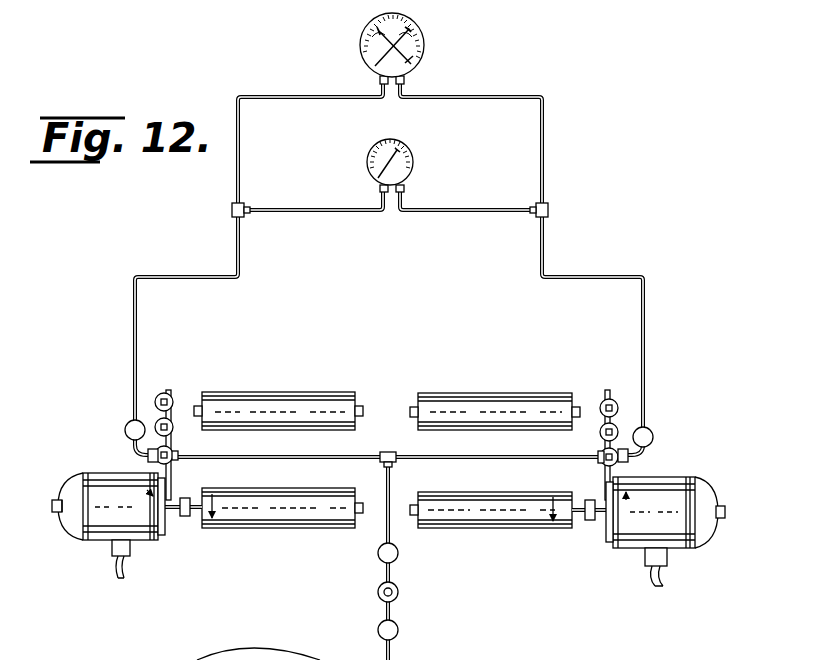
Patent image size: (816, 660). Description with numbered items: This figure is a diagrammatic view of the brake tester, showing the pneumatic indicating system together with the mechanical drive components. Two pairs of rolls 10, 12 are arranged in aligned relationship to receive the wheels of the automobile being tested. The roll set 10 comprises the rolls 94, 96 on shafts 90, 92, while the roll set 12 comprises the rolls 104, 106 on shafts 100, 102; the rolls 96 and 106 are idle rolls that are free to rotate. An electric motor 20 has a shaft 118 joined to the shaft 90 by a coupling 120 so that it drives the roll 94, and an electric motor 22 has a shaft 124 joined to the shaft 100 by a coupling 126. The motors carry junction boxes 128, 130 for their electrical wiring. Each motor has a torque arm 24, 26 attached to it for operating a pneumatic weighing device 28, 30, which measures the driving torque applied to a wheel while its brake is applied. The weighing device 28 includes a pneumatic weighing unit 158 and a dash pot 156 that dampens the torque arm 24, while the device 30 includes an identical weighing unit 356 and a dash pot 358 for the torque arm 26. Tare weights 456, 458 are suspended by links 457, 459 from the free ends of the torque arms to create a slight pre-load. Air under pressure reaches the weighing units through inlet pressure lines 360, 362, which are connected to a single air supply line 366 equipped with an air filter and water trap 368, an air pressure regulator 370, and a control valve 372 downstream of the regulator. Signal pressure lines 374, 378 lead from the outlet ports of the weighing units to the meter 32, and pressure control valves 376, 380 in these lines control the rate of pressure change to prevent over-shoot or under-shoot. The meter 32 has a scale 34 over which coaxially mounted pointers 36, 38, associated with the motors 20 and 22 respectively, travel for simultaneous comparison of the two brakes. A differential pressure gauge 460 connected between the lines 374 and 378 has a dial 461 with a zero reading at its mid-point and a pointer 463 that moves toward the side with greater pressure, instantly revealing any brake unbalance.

The pair of rolls 10 is at (275, 455).
The pair of rolls 12 is at (501, 460).
The electric motor 20 is at (89, 515).
The electric motor 22 is at (673, 511).
The torque arm 24 is at (169, 390).
The torque arm 26 is at (608, 390).
The pneumatic weighing device 28 is at (153, 416).
The pneumatic weighing device 30 is at (618, 417).
The meter 32 is at (397, 46).
The scale 34 is at (414, 63).
The pointer 36 is at (376, 42).
The pointer 38 is at (417, 48).
The shaft 90 is at (198, 500).
The shaft 92 is at (361, 404).
The roll 94 is at (270, 490).
The roll 96 is at (318, 400).
The shaft 100 is at (410, 505).
The shaft 102 is at (484, 492).
The roll 104 is at (415, 405).
The roll 106 is at (511, 394).
The motor shaft 118 is at (55, 500).
The coupling 120 is at (186, 516).
The motor shaft 124 is at (716, 506).
The coupling 126 is at (590, 521).
The junction box 128 is at (112, 548).
The junction box 130 is at (668, 556).
The dash pot 156 is at (176, 430).
The pneumatic weighing unit 158 is at (147, 457).
The pneumatic weighing unit 356 is at (598, 452).
The dash pot 358 is at (601, 422).
The supply conduit 360 is at (248, 455).
The inlet pressure line 362 is at (466, 455).
The air supply line 366 is at (391, 575).
The air filter and water trap 368 is at (378, 624).
The air pressure regulator 370 is at (398, 591).
The control valve 372 is at (398, 550).
The signal pressure line 374 is at (237, 160).
The pressure control valve 376 is at (125, 428).
The signal pressure line 378 is at (545, 120).
The pressure control valve 380 is at (652, 433).
The tare weight 456 is at (157, 398).
The link 457 is at (158, 422).
The tare weight 458 is at (612, 404).
The link 459 is at (614, 428).
The differential pressure gauge 460 is at (389, 152).
The dial 461 is at (410, 170).
The pointer 463 is at (372, 155).